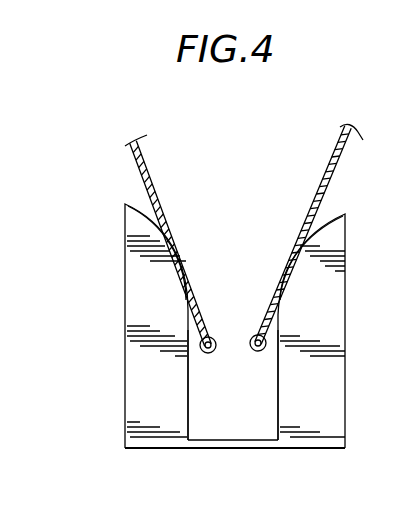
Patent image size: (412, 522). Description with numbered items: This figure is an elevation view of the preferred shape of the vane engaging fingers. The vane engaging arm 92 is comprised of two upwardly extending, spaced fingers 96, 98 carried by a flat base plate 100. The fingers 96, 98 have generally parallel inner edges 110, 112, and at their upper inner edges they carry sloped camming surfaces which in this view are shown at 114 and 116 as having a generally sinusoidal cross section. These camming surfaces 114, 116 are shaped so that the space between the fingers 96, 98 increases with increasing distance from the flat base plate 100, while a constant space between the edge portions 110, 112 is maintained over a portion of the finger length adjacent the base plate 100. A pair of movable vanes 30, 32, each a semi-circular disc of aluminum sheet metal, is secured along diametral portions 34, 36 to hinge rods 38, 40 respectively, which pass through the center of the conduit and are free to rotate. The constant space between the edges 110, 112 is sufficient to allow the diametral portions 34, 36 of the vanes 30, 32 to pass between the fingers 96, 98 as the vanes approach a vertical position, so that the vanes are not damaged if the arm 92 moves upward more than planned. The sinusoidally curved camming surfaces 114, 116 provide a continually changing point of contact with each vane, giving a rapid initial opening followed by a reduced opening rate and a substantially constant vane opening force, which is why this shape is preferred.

The movable vane 30 is at (134, 153).
The movable vane 32 is at (340, 160).
The diametral portion 34 is at (213, 336).
The diametral portion 36 is at (262, 333).
The hinge rod 38 is at (207, 354).
The hinge rod 40 is at (256, 352).
The vane engaging arm 92 is at (121, 453).
The finger 96 is at (125, 367).
The finger 98 is at (346, 383).
The flat base plate 100 is at (278, 449).
The inner edge 110 is at (189, 415).
The inner edge 112 is at (278, 405).
The sinusoidal camming surface 114 is at (175, 267).
The sinusoidal camming surface 116 is at (292, 272).